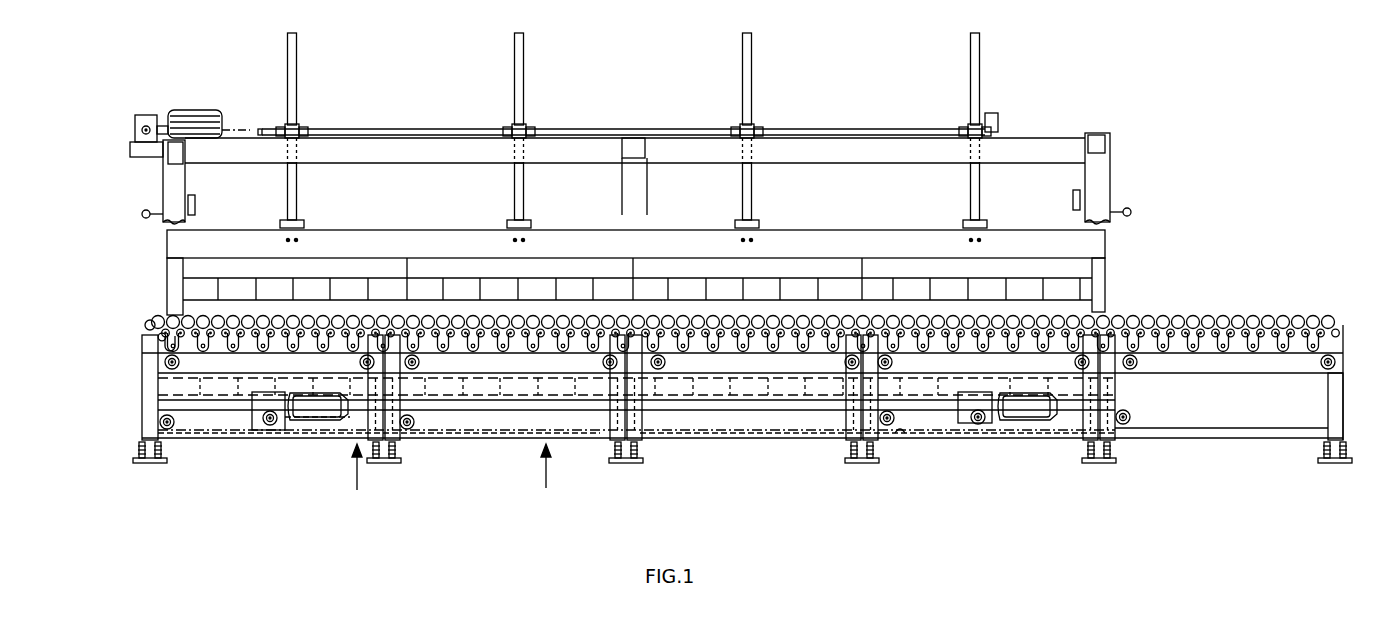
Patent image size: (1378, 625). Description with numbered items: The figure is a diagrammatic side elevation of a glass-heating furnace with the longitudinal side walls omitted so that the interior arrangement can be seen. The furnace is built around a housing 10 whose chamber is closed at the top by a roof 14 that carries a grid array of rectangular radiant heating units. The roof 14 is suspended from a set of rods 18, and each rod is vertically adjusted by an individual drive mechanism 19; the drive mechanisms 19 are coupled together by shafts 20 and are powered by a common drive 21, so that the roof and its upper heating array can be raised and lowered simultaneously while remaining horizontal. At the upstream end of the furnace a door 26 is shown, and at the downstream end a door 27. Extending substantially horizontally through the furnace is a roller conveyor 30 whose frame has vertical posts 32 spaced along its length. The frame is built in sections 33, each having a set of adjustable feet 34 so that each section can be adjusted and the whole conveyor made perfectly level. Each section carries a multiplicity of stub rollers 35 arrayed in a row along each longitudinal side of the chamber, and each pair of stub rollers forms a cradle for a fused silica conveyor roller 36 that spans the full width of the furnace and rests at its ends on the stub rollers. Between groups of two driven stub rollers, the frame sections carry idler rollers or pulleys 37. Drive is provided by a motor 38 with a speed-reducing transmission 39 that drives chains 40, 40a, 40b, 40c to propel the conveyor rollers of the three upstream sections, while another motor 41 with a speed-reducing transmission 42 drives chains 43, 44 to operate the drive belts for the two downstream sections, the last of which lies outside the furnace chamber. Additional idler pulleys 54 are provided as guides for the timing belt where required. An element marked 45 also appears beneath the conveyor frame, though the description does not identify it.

The housing 10 is at (168, 265).
The roof 14 is at (224, 248).
The rods 18 is at (297, 190).
The drive mechanisms 19 is at (296, 126).
The shafts 20 is at (430, 130).
The common drive 21 is at (190, 112).
The door 26 is at (167, 300).
The door 27 is at (1103, 320).
The roller conveyor 30 is at (1155, 302).
The vertical posts 32 is at (1092, 425).
The frame sections 33 is at (455, 488).
The adjustable feet 34 is at (150, 465).
The stub rollers 35 is at (160, 338).
The fused silica conveyor roller 36 is at (150, 320).
The idler rollers or pulleys 37 is at (168, 348).
The motor 38 is at (320, 430).
The speed-reducing transmission 39 is at (268, 430).
The chain 40 is at (190, 430).
The chain 40a is at (508, 438).
The chain 40b is at (745, 440).
The chain 40c is at (313, 430).
The motor 41 is at (1032, 424).
The speed-reducing transmission 42 is at (968, 424).
The chain 43 is at (905, 436).
The chain 44 is at (1125, 410).
The foot 45 is at (616, 458).
The idler pulleys 54 is at (420, 365).